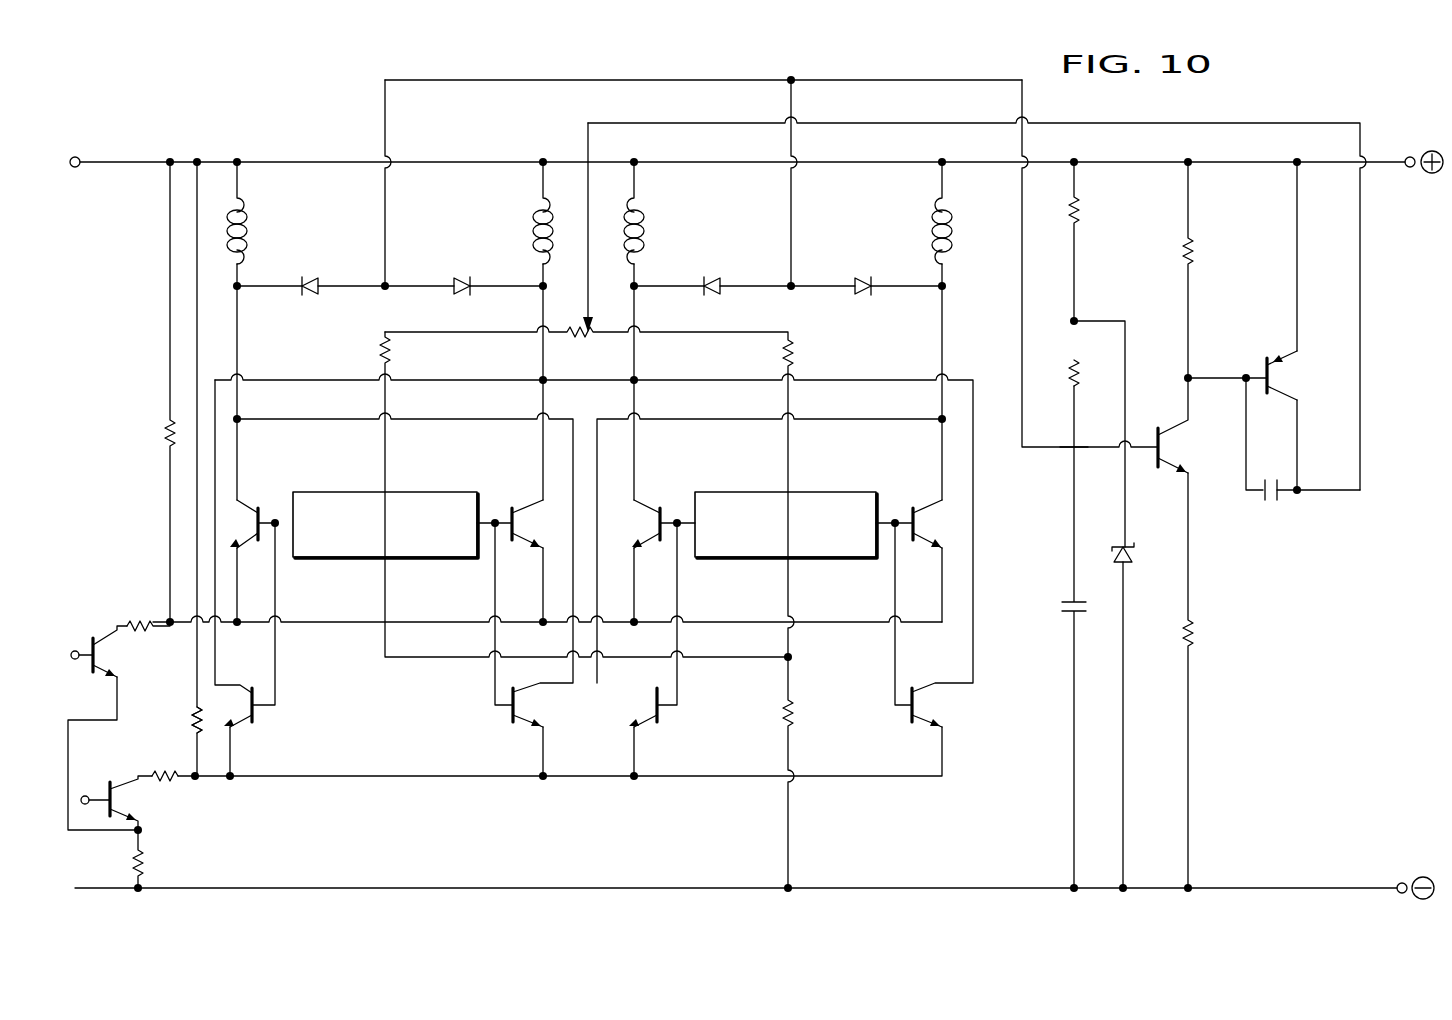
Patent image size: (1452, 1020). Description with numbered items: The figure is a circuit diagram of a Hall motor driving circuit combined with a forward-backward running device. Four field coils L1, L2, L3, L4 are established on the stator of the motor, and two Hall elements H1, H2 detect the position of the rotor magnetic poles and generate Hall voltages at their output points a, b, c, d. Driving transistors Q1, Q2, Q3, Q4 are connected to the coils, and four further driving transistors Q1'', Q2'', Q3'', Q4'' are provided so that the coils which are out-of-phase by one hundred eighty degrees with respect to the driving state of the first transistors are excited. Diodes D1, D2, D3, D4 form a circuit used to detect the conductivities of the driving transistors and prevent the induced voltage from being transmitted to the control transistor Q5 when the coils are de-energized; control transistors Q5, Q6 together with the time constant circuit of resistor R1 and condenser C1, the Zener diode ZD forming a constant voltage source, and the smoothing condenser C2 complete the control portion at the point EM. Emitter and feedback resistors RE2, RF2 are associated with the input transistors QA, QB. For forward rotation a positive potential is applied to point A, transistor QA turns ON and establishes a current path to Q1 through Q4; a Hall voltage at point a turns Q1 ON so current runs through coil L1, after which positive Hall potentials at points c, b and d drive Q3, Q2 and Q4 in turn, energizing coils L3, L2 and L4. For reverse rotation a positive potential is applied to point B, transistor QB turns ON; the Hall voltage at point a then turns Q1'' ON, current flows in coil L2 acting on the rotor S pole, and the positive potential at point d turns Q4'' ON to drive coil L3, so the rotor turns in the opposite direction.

The field coil L1 is at (247, 225).
The field coil L2 is at (533, 224).
The field coil L3 is at (644, 224).
The field coil L4 is at (931, 222).
The diode D1 is at (309, 278).
The diode D2 is at (462, 278).
The diode D3 is at (712, 278).
The diode D4 is at (863, 278).
The Hall element H1 is at (430, 492).
The Hall element H2 is at (850, 492).
The driving transistor Q1 is at (252, 505).
The driving transistor Q2 is at (510, 505).
The driving transistor Q3 is at (663, 505).
The driving transistor Q4 is at (909, 505).
The driving transistor Q1'' is at (245, 686).
The driving transistor Q2'' is at (559, 707).
The driving transistor Q3'' is at (622, 716).
The driving transistor Q4'' is at (959, 707).
The transistor QA is at (110, 655).
The transistor QB is at (125, 810).
The point A is at (73, 640).
The point B is at (84, 785).
The point a is at (275, 509).
The point b is at (493, 509).
The point c is at (674, 509).
The point d is at (893, 508).
The resistor RF2 is at (191, 714).
The resistor RE2 is at (162, 768).
The resistor R1 is at (1086, 372).
The motor voltage point EM is at (1068, 450).
The condenser C1 is at (1046, 637).
The condenser C2 is at (1270, 502).
The Zener diode ZD is at (1138, 578).
The control transistor Q5 is at (1170, 445).
The control transistor Q6 is at (1290, 373).